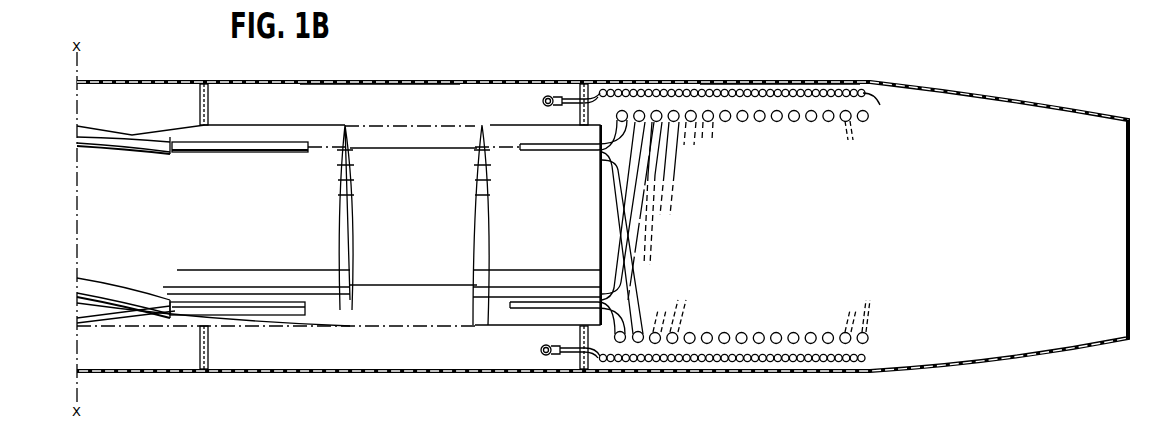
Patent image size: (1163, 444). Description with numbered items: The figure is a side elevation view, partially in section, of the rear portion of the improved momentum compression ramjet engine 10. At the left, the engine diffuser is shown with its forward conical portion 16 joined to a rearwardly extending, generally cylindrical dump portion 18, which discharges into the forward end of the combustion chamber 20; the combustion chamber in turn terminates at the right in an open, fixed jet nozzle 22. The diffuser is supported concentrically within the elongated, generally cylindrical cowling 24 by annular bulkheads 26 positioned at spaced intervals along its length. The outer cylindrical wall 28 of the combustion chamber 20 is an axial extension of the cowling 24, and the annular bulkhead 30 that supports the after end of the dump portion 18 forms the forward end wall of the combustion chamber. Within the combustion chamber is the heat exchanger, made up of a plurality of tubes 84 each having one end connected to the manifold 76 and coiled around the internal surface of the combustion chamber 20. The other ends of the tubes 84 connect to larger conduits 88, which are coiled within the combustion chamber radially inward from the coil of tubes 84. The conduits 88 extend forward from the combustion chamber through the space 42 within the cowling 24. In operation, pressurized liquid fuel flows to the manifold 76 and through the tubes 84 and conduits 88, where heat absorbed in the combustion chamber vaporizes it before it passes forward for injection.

The momentum compression ramjet engine 10 is at (705, 76).
The conical portion of diffuser 16 is at (180, 130).
The dump portion of diffuser 18 is at (325, 285).
The combustion chamber 20 is at (787, 150).
The jet nozzle 22 is at (1134, 125).
The cowling 24 is at (378, 80).
The annular bulkheads 26 is at (206, 100).
The outer cylindrical wall of combustion chamber 28 is at (770, 82).
The annular bulkhead 30 is at (580, 90).
The space within cowling 42 is at (430, 105).
The manifold of heat exchanger 76 is at (548, 356).
The tubes 84 is at (875, 97).
The larger conduits 88 is at (300, 143).